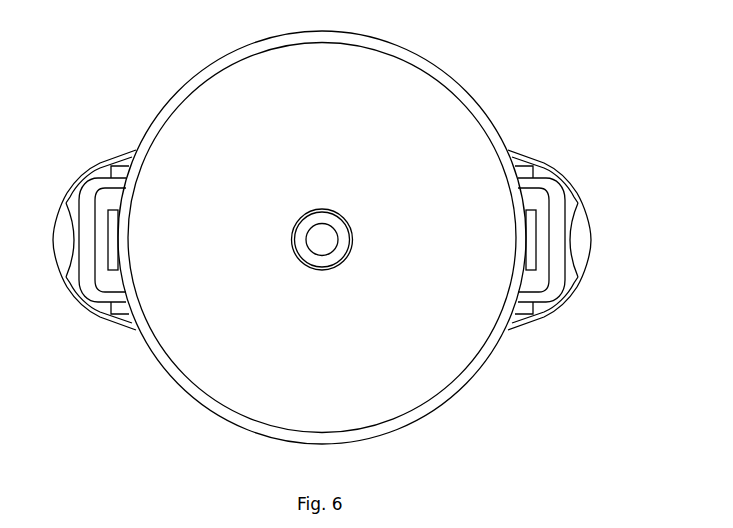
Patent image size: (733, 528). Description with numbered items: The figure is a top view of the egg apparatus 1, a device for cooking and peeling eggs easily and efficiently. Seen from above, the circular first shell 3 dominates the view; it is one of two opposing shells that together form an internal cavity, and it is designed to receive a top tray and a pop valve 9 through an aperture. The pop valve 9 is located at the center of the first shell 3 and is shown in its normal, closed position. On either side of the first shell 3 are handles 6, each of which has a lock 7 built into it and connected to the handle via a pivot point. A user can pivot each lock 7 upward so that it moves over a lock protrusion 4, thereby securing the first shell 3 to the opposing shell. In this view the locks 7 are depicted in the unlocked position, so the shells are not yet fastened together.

The egg apparatus 1 is at (132, 395).
The first shell 3 is at (400, 387).
The lock protrusion 4 is at (532, 192).
The handle 6 is at (580, 247).
The lock 7 is at (553, 219).
The pop valve 9 is at (327, 241).